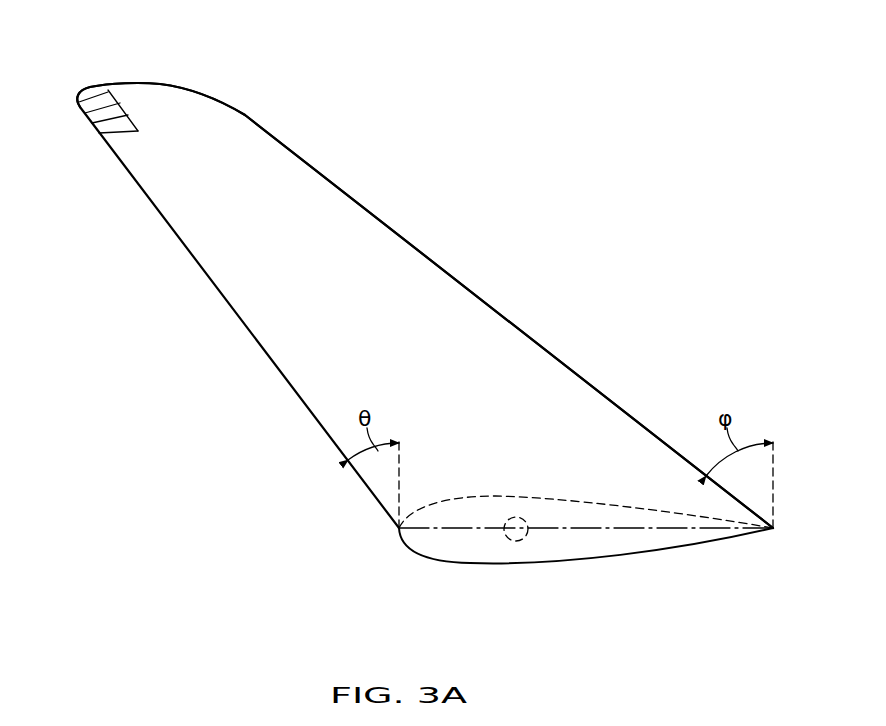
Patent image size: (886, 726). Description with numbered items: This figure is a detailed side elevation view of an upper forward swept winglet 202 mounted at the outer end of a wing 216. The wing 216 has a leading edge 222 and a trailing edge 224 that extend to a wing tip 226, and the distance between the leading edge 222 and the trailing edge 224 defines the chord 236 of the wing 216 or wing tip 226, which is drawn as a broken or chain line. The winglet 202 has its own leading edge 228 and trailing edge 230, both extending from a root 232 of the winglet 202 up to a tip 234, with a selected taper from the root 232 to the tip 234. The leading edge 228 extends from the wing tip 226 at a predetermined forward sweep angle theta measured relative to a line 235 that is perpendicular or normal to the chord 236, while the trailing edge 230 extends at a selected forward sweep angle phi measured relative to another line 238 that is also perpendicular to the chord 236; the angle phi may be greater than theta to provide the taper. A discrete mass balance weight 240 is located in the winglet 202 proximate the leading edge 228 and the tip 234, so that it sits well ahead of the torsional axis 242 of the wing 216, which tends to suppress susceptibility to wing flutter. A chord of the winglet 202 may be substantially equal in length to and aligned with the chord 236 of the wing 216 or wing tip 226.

The forward swept winglet 202 is at (530, 281).
The wing 216 is at (551, 498).
The leading edge 222 is at (398, 528).
The trailing edge 224 is at (774, 528).
The wing tip 226 is at (606, 540).
The leading edge 228 is at (224, 297).
The trailing edge 230 is at (570, 367).
The root 232 is at (778, 543).
The tip 234 is at (160, 83).
The line 235 is at (400, 456).
The chord 236 is at (472, 533).
The line 238 is at (774, 456).
The mass balance weight 240 is at (94, 127).
The torsional axis 242 is at (517, 540).